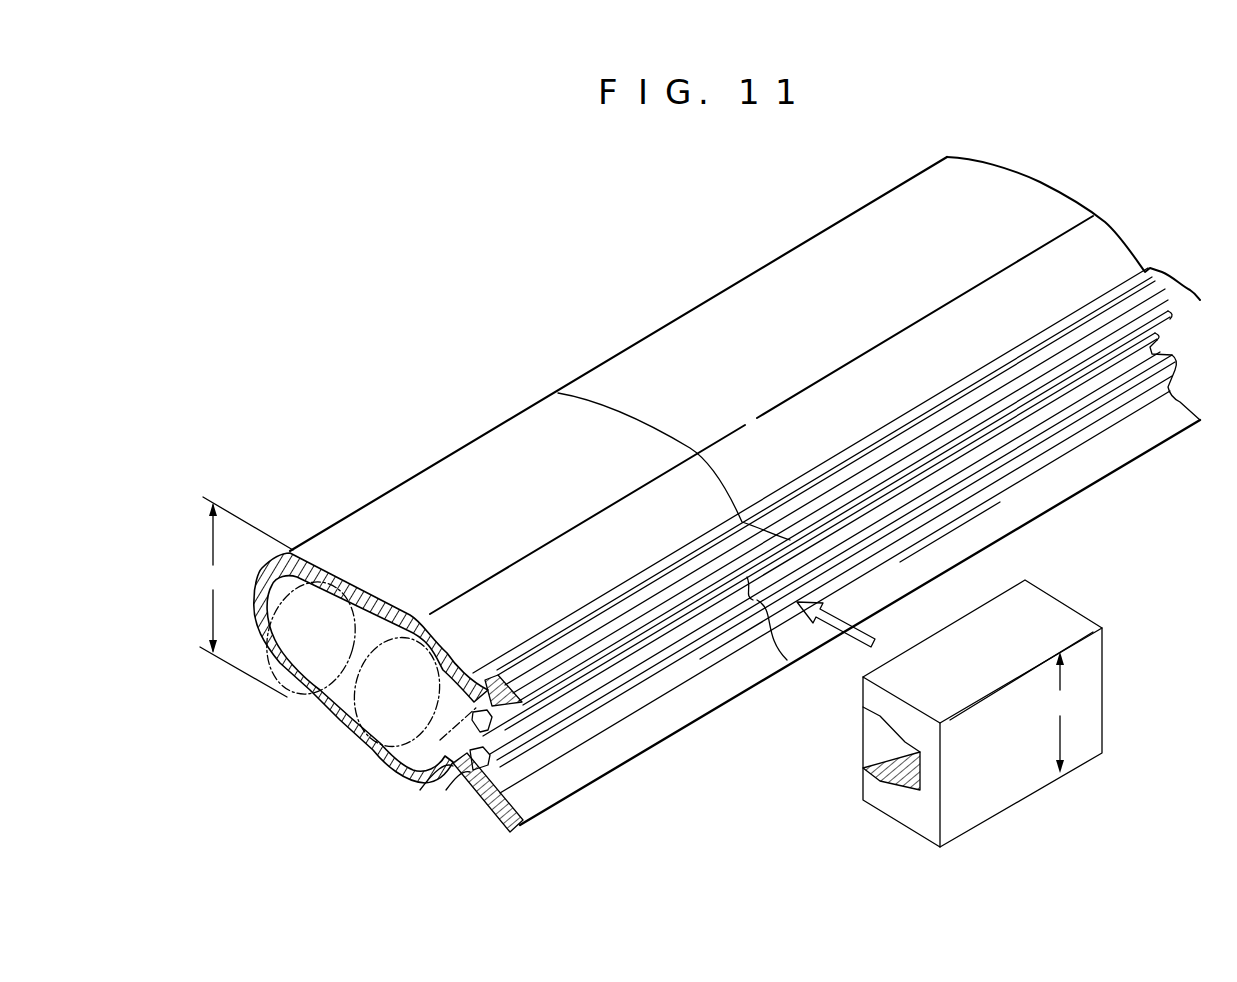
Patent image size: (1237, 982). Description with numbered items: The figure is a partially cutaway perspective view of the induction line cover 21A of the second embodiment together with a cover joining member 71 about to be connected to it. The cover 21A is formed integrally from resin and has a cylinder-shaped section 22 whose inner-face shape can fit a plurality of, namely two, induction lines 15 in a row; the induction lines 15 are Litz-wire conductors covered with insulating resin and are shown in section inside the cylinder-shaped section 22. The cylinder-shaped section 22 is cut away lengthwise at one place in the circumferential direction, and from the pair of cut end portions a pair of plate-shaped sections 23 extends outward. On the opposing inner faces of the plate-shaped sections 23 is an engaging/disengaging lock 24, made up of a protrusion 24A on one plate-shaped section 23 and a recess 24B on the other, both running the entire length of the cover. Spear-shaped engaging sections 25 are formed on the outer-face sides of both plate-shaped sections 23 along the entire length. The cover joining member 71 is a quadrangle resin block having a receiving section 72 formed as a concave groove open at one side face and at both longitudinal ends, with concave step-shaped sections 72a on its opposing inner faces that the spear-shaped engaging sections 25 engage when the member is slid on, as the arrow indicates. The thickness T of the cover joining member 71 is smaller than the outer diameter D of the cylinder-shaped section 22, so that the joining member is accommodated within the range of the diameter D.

The induction line cover 21A is at (532, 402).
The induction line 15 is at (407, 648).
The cylinder-shaped section 22 is at (320, 713).
The plate-shaped sections 23 is at (487, 680).
The engaging/disengaging lock 24 is at (420, 833).
The protrusion 24A is at (450, 760).
The recess 24B is at (470, 765).
The engaging sections 25 is at (560, 627).
The cover joining member 71 is at (960, 735).
The receiving section 72 is at (869, 798).
The concave step-shaped sections 72a is at (902, 777).
The outer diameter D is at (246, 597).
The thickness T is at (1059, 712).